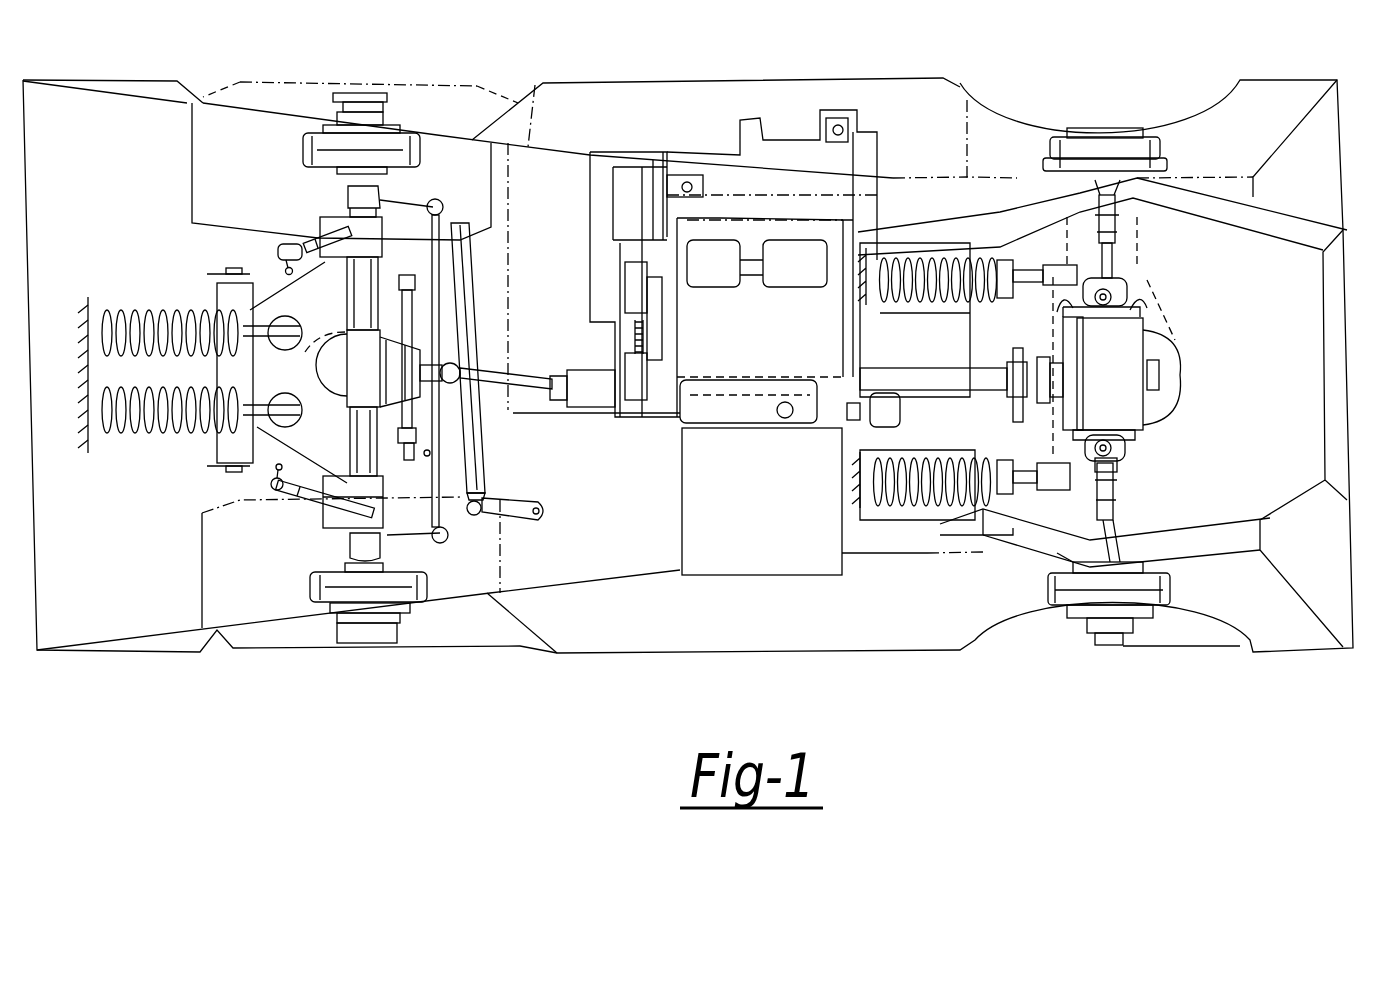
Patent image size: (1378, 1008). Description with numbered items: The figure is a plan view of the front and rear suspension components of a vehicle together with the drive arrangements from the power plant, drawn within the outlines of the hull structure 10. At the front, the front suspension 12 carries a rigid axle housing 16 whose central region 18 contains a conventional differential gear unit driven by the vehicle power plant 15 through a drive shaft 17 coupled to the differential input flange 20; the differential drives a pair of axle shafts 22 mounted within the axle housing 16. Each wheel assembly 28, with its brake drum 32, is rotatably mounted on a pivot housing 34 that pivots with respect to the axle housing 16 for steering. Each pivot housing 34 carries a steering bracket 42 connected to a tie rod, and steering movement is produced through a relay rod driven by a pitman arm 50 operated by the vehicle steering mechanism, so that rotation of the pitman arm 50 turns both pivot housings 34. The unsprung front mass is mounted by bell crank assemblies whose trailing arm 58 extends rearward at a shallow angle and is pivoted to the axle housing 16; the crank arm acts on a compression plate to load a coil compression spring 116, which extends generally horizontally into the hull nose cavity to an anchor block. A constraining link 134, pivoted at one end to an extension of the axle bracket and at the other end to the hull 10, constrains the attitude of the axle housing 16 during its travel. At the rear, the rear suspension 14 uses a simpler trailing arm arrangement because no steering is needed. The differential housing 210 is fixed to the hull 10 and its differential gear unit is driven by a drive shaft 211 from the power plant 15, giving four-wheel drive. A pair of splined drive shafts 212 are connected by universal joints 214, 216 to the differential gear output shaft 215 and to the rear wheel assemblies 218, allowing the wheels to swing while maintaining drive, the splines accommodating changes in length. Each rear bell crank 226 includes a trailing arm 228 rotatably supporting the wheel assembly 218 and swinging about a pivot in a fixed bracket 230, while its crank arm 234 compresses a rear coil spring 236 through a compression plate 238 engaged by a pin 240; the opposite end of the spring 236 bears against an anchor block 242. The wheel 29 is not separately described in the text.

The hull structure 10 is at (668, 652).
The front suspension 12 is at (492, 469).
The rear suspension 14 is at (1185, 338).
The vehicle power plant 15 is at (672, 434).
The rigid axle housing 16 is at (345, 297).
The drive shaft 17 is at (518, 372).
The central region 18 is at (373, 383).
The differential input flange 20 is at (465, 366).
The axle shafts 22 is at (308, 399).
The wheel assembly 28 is at (334, 369).
The tire 29 is at (303, 148).
The brake drum 32 is at (307, 590).
The pivot housing 34 is at (345, 187).
The steering bracket 42 is at (420, 188).
The pitman arm 50 is at (505, 515).
The trailing arm 58 is at (268, 263).
The coil compression spring 116 is at (108, 308).
The constraining link 134 is at (312, 243).
The differential housing 210 is at (1180, 370).
The drive shaft 211 is at (950, 343).
The splined drive shafts 212 is at (1120, 249).
The universal joint 214 is at (1130, 466).
The differential gear output shaft 215 is at (1128, 297).
The universal joint 216 is at (1125, 537).
The rear wheel assembly 218 is at (1086, 82).
The bell crank 226 is at (983, 540).
The trailing arm 228 is at (1050, 558).
The fixed bracket 230 is at (935, 548).
The crank arm 234 is at (1037, 462).
The rear coil spring 236 is at (945, 518).
The compression plate 238 is at (995, 443).
The pin 240 is at (978, 428).
The anchor block 242 is at (855, 470).